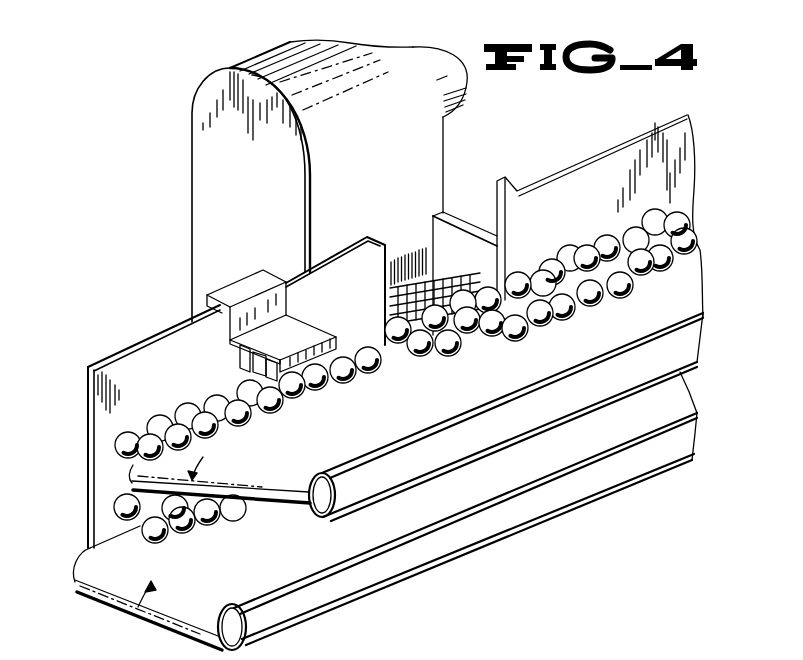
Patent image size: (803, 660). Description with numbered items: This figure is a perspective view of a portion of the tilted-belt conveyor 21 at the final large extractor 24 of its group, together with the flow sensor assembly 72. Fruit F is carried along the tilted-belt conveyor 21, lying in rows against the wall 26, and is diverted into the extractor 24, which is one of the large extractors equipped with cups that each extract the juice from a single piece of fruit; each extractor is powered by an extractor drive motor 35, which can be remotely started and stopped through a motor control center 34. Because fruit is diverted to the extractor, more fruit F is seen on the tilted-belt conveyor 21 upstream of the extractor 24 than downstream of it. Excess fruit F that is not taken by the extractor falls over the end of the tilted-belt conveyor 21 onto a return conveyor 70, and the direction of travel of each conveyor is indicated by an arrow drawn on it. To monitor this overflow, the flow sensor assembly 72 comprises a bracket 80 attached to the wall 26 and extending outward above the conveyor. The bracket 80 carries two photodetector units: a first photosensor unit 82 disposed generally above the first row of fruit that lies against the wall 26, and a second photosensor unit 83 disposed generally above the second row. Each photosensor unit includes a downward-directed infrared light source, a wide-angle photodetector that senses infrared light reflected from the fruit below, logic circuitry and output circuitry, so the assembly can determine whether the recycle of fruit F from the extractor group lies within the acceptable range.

The large extractor 24 is at (382, 143).
The motor control center 34 is at (470, 92).
The extractor drive motor 35 is at (455, 100).
The bracket 80 is at (247, 285).
The flow sensor assembly 72 is at (311, 313).
The first photosensor unit 82 is at (238, 353).
The second photosensor unit 83 is at (266, 372).
The wall 26 is at (95, 443).
The tilted-belt conveyor 21 is at (417, 403).
The return conveyor 70 is at (307, 556).
The fruit F is at (365, 299).